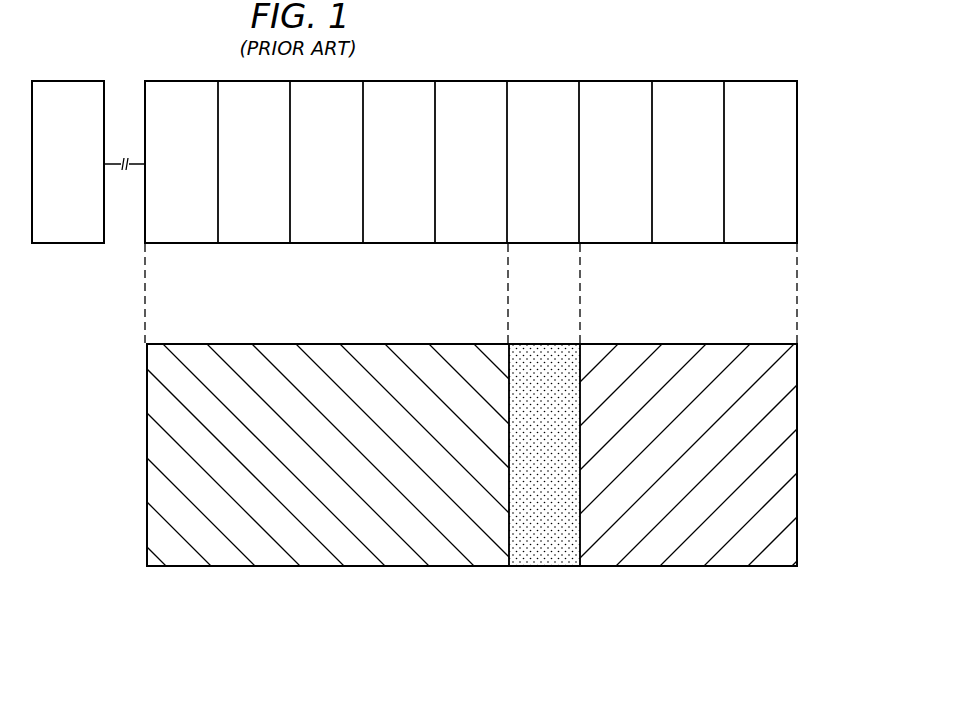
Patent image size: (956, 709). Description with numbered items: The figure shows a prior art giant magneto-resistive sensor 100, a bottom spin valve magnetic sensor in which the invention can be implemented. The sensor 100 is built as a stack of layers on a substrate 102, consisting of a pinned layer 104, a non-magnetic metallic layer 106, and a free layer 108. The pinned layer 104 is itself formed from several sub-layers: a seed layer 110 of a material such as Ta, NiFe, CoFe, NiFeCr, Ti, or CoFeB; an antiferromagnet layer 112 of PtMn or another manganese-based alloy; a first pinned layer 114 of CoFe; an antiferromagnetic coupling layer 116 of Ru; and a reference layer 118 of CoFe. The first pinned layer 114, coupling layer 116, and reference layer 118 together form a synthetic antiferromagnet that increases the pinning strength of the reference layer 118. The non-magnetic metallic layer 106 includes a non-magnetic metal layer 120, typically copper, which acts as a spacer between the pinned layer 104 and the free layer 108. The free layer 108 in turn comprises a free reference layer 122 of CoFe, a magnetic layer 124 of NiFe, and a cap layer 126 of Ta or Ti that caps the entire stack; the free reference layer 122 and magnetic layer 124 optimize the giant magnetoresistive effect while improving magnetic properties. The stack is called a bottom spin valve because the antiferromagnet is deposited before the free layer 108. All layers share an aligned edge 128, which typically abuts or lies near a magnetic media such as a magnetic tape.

The giant magneto-resistive sensor 100 is at (478, 506).
The substrate 102 is at (65, 245).
The pinned layer 104 is at (233, 567).
The non-magnetic metallic layer 106 is at (548, 567).
The free layer 108 is at (730, 567).
The seed layer 110 is at (182, 245).
The antiferromagnet layer 112 is at (243, 245).
The first pinned layer 114 is at (316, 245).
The antiferromagnetic coupling layer 116 is at (398, 245).
The reference layer 118 is at (470, 245).
The non-magnetic metal layer 120 is at (545, 245).
The free reference layer 122 is at (628, 245).
The magnetic layer 124 is at (688, 245).
The cap layer 126 is at (760, 245).
The edge 128 is at (557, 82).